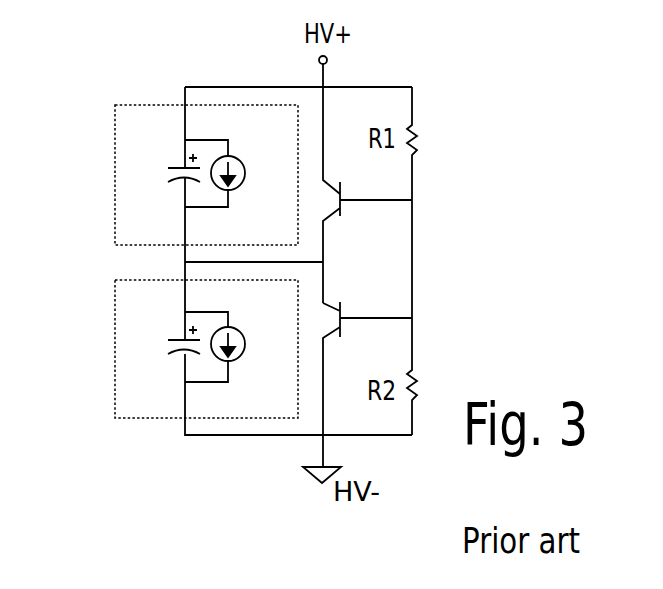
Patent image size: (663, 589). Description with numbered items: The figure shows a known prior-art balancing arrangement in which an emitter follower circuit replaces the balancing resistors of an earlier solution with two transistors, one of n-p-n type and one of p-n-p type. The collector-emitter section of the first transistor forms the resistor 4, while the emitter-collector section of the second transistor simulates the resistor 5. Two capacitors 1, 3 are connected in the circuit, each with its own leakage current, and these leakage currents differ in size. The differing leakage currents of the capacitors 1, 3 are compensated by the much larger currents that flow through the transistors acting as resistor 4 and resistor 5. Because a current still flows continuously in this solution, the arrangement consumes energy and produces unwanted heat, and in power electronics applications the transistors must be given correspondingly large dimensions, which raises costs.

The capacitor 1 is at (182, 163).
The capacitor 3 is at (185, 332).
The resistor 4 is at (352, 207).
The resistor 5 is at (345, 315).